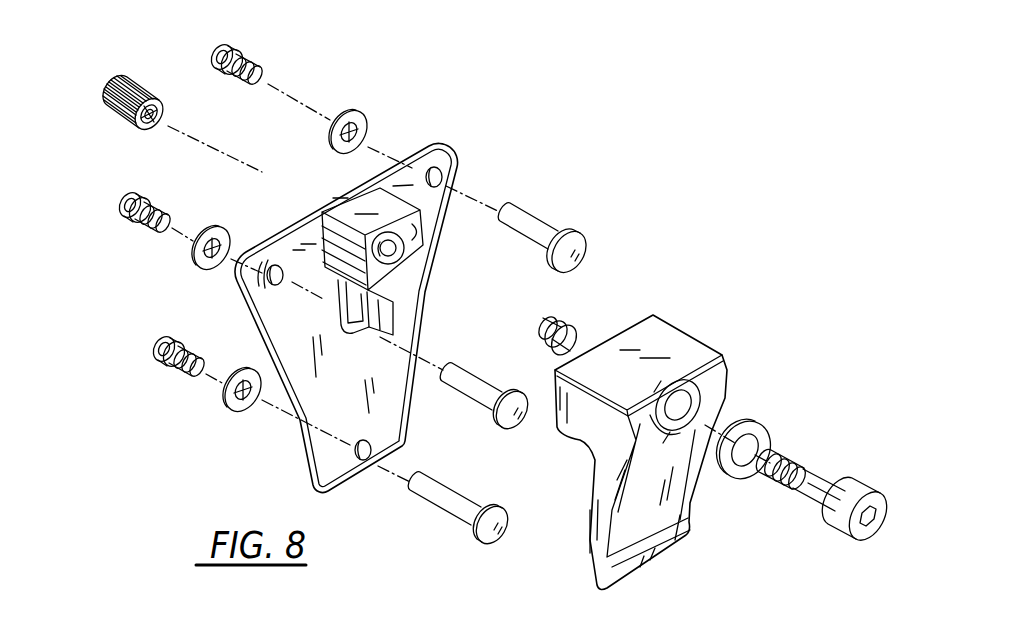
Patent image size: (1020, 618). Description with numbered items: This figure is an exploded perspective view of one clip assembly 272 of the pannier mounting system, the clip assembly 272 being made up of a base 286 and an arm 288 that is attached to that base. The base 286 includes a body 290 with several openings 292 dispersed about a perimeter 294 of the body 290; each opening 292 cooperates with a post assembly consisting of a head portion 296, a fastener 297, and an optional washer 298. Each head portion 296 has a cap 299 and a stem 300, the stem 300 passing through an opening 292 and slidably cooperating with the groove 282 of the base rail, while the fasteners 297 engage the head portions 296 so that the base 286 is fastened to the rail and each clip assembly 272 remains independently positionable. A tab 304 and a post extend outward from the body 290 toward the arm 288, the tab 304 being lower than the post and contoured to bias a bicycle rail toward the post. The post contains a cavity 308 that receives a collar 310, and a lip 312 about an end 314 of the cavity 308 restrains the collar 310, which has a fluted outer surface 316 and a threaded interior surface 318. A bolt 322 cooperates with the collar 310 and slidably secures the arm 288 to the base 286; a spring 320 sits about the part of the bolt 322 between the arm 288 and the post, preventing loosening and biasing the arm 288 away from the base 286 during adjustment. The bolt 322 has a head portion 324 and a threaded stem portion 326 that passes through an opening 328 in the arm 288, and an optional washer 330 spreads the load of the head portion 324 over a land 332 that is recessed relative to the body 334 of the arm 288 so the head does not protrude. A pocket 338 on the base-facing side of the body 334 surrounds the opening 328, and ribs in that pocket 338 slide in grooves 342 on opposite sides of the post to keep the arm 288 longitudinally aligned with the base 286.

The clip assembly 272 is at (758, 82).
The groove 282 is at (616, 174).
The base 286 is at (397, 425).
The arm 288 is at (590, 553).
The body 290 is at (417, 288).
The openings 292 is at (445, 166).
The perimeter 294 is at (410, 352).
The head portion 296 is at (547, 220).
The fastener 297 is at (257, 50).
The washer 298 is at (367, 117).
The cap 299 is at (582, 240).
The stem 300 is at (533, 208).
The tab 304 is at (377, 303).
The cavity 308 is at (405, 247).
The collar 310 is at (150, 92).
The lip 312 is at (447, 198).
The end 314 is at (330, 213).
The fluted outer surface 316 is at (132, 82).
The threaded interior surface 318 is at (155, 130).
The spring 320 is at (566, 317).
The bolt 322 is at (812, 492).
The head portion 324 is at (863, 487).
The stem portion 326 is at (780, 460).
The opening 328 is at (703, 400).
The washer 330 is at (760, 425).
The land 332 is at (727, 380).
The body 334 is at (593, 452).
The pocket 338 is at (712, 357).
The groove 342 is at (417, 232).